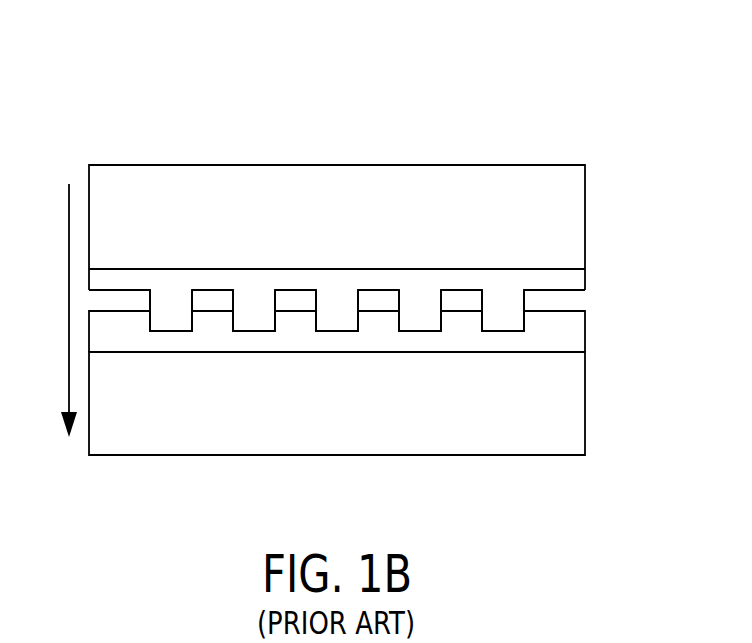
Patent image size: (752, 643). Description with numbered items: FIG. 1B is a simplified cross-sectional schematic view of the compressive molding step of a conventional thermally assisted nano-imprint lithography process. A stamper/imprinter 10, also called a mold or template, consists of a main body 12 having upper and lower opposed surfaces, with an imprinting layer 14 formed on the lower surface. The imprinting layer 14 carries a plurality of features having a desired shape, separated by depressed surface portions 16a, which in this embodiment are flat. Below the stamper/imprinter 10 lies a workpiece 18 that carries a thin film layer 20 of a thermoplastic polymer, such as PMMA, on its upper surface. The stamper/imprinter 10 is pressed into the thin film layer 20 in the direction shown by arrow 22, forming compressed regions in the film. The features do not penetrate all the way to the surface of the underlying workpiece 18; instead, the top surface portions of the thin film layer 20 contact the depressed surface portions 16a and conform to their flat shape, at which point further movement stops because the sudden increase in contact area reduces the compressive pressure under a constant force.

The stamper/imprinter 10 is at (170, 80).
The main body 12 is at (586, 222).
The imprinting layer 14 is at (586, 282).
The depressed surface portions 16a is at (130, 290).
The workpiece 18 is at (586, 378).
The thin film layer 20 is at (586, 326).
The arrow 22 is at (68, 303).